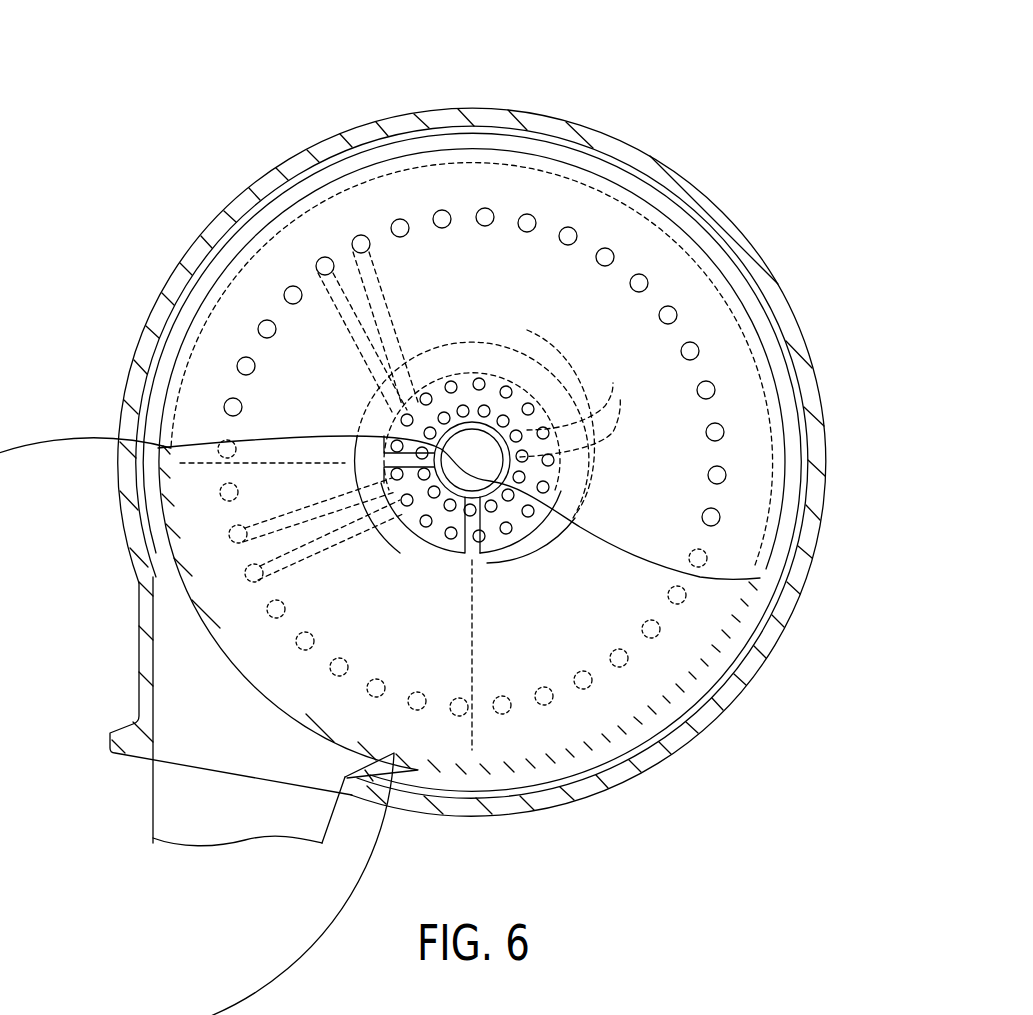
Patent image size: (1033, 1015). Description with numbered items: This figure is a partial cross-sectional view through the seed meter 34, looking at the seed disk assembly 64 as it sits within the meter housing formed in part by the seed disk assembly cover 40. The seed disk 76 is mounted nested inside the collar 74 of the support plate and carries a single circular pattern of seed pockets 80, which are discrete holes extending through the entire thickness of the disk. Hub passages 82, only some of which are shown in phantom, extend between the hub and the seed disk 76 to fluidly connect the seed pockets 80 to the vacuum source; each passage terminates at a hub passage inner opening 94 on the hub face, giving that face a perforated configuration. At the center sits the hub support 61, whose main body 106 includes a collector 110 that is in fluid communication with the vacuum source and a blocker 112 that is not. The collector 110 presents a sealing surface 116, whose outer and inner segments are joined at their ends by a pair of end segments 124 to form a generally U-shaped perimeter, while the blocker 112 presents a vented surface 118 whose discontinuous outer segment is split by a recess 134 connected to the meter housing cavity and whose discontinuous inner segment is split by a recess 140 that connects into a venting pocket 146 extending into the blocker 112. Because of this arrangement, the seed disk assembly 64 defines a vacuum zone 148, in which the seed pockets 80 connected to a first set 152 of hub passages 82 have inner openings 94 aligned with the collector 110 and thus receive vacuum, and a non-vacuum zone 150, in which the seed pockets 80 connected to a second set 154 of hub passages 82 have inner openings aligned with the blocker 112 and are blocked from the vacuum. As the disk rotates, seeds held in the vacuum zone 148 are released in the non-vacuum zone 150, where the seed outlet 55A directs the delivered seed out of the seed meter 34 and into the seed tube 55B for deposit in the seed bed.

The seed meter 34 is at (635, 85).
The seed disk assembly cover 40 is at (763, 673).
The collar 74 is at (810, 372).
The seed disk assembly 64 is at (323, 184).
The vacuum zone 148 is at (778, 462).
The seed disk 76 is at (710, 322).
The seed outlet 55A is at (183, 768).
The seed tube 55B is at (167, 813).
The seed pockets 80 is at (703, 510).
The hub passages 82 is at (393, 297).
The second set of hub passages 154 is at (277, 574).
The non-vacuum zone 150 is at (330, 700).
The collector 110 is at (428, 345).
The sealing surface 116 is at (490, 360).
The main body 106 is at (562, 366).
The hub passage inner openings 94 is at (610, 395).
The first set of hub passages 152 is at (425, 283).
The recess 140 is at (447, 483).
The blocker 112 is at (348, 480).
The end segments 124 is at (390, 458).
The recess 134 is at (383, 556).
The venting pocket 146 is at (410, 542).
The vented surface 118 is at (442, 560).
The hub support 61 is at (568, 542).